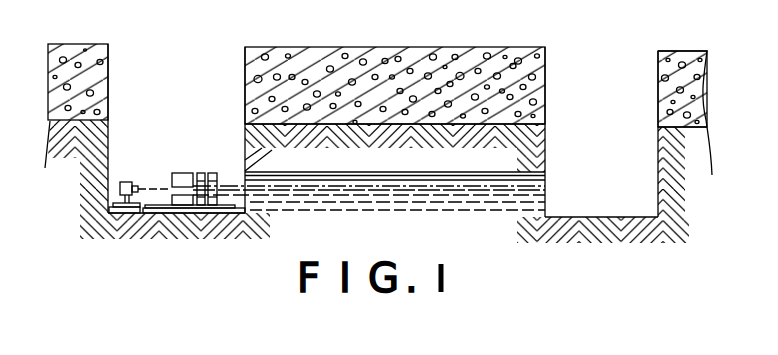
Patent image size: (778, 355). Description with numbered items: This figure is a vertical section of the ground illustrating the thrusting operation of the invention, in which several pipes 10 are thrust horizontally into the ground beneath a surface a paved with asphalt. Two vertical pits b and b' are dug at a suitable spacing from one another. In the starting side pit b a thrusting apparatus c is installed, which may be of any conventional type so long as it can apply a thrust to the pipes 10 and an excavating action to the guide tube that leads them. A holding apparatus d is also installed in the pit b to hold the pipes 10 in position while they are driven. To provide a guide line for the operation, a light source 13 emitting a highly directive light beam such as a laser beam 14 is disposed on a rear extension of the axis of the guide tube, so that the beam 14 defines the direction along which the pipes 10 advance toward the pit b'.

The surface a is at (439, 60).
The vertical pit b is at (93, 128).
The vertical pit b' is at (413, 132).
The pipes 10 is at (269, 190).
The light source 13 is at (127, 183).
The laser beam 14 is at (158, 194).
The thrusting apparatus c is at (185, 173).
The holding apparatus d is at (212, 173).